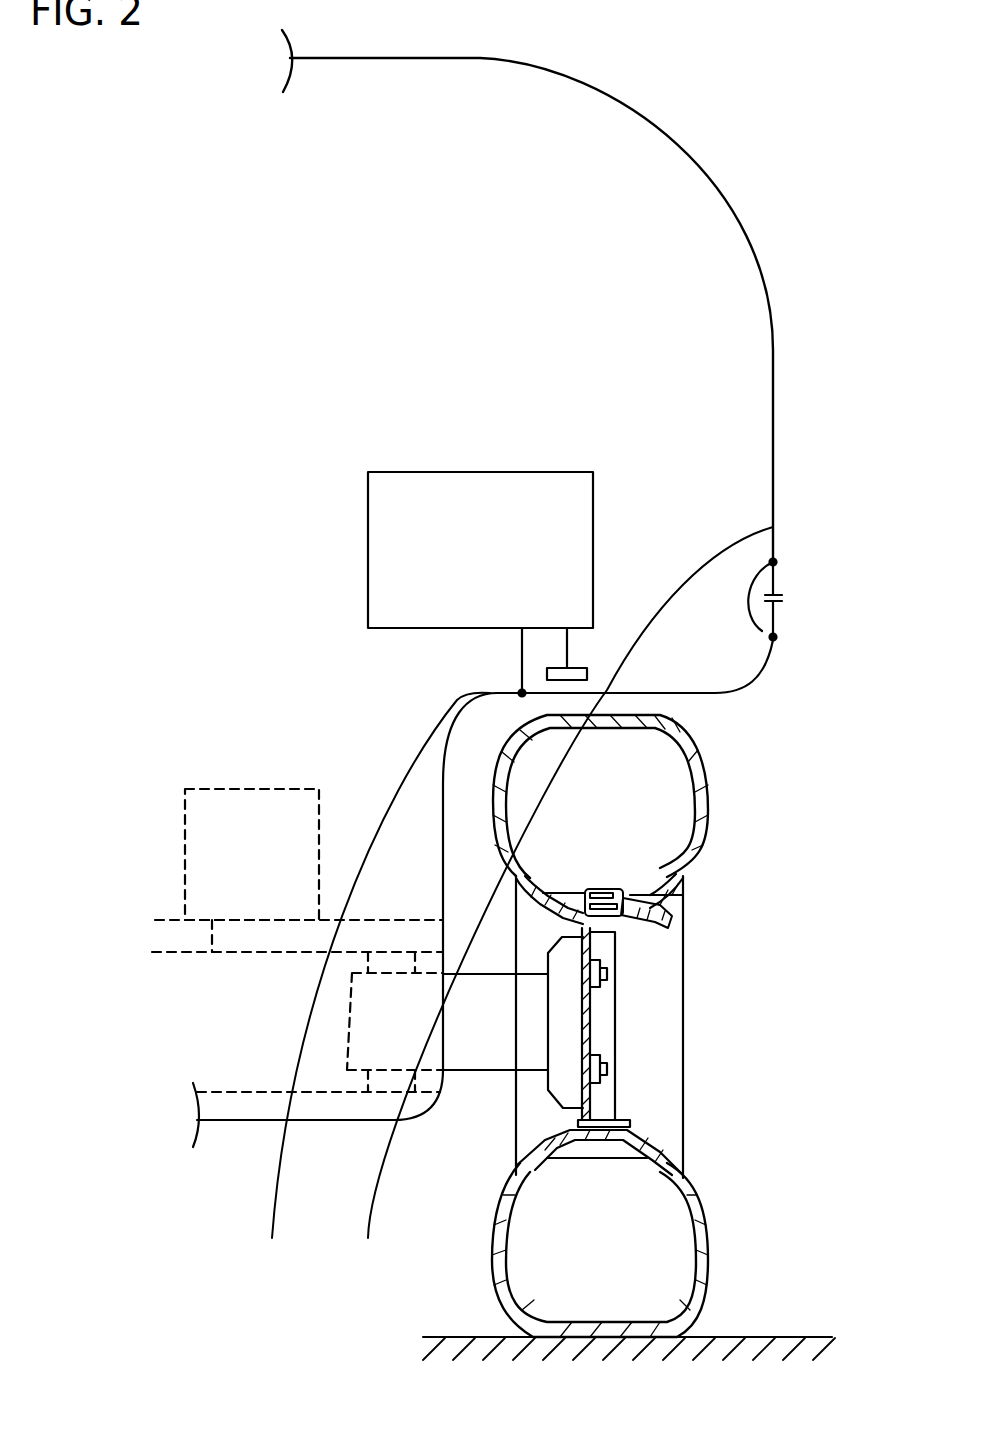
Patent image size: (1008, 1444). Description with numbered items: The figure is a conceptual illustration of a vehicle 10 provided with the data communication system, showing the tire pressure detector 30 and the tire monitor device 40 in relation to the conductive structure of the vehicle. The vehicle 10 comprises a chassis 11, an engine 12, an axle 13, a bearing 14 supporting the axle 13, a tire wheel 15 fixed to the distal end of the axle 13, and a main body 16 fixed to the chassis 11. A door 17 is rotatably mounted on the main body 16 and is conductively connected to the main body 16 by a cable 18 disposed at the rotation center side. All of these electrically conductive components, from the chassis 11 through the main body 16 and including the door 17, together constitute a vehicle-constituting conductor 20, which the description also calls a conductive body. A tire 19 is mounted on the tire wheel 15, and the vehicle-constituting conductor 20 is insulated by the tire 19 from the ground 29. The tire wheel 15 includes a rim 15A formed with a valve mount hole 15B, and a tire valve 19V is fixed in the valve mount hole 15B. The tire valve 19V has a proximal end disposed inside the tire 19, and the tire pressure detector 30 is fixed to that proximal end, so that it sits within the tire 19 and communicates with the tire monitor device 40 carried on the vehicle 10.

The vehicle 10 is at (809, 158).
The chassis 11 is at (260, 952).
The engine 12 is at (212, 952).
The axle 13 is at (458, 1070).
The bearing 14 is at (380, 1092).
The tire wheel 15 is at (615, 1070).
The rim 15A is at (620, 930).
The valve mount hole 15B is at (677, 886).
The main body 16 is at (371, 983).
The door 17 is at (563, 900).
The cable 18 is at (760, 622).
The tire 19 is at (693, 838).
The tire valve 19V is at (670, 920).
The vehicle-constituting conductor 20 is at (147, 1273).
The ground 29 is at (800, 1337).
The tire pressure detector 30 is at (600, 886).
The tire monitor device 40 is at (423, 470).